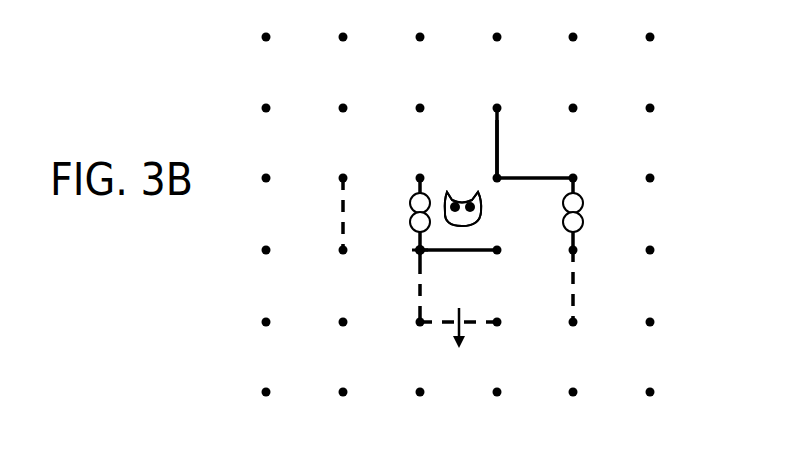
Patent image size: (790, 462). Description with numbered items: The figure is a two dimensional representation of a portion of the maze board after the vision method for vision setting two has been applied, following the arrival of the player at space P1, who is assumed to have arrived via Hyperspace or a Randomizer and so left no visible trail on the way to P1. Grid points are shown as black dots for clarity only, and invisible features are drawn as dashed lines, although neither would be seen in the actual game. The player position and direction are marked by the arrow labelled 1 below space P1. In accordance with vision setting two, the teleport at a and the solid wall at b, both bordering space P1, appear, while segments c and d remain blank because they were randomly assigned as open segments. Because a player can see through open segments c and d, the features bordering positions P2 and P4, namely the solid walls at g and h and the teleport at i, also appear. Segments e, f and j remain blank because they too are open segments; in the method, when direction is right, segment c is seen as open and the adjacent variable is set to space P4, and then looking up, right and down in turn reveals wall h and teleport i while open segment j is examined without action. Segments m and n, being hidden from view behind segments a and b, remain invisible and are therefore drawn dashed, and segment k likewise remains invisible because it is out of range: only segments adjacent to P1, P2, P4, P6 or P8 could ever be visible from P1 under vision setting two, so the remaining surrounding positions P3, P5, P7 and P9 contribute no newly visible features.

The player (at space P1) 1 is at (478, 323).
The teleport a is at (417, 246).
The solid wall b is at (482, 255).
The open segment c is at (475, 210).
The open segment d is at (463, 194).
The open segment e is at (420, 196).
The open segment f is at (474, 136).
The solid wall g is at (500, 130).
The solid wall h is at (548, 176).
The teleport i is at (580, 210).
The open segment j is at (555, 217).
The invisible segment (out of range) k is at (573, 283).
The hidden segment m is at (417, 297).
The hidden segment n is at (340, 190).
The space P1 is at (450, 237).
The position P2 is at (458, 143).
The position P3 is at (535, 143).
The space P4 is at (535, 214).
The position P5 is at (535, 286).
The position P6 is at (458, 286).
The position P7 is at (381, 286).
The position P8 is at (381, 214).
The position P9 is at (381, 143).